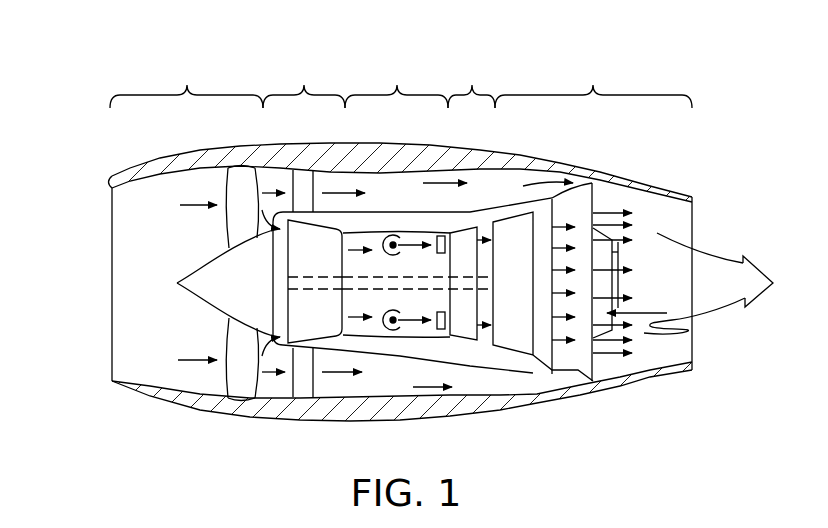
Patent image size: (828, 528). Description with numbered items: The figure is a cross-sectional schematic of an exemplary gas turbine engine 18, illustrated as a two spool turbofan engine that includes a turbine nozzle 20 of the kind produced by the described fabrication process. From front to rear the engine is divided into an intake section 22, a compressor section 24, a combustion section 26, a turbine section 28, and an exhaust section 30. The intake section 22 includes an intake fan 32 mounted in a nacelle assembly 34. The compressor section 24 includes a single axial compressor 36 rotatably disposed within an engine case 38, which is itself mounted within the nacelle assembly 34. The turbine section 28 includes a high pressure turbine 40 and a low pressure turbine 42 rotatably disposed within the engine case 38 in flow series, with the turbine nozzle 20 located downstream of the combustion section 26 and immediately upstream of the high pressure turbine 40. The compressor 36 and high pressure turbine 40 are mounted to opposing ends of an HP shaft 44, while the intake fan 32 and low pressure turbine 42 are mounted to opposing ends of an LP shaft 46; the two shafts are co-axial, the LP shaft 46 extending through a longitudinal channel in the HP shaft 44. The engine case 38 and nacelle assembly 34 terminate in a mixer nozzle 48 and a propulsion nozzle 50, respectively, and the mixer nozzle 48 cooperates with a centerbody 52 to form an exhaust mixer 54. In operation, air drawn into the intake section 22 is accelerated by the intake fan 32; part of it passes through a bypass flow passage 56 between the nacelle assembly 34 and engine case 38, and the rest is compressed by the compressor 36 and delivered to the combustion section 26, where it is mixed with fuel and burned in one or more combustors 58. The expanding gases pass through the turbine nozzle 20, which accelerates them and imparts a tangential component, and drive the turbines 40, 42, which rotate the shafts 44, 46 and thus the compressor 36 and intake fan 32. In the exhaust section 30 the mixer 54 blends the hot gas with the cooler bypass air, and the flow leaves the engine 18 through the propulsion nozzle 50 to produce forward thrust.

The gas turbine engine 18 is at (706, 66).
The turbine nozzle 20 is at (440, 235).
The intake section 22 is at (186, 81).
The compressor section 24 is at (304, 81).
The combustion section 26 is at (396, 81).
The turbine section 28 is at (471, 81).
The exhaust section 30 is at (593, 81).
The intake fan 32 is at (213, 294).
The nacelle assembly 34 is at (235, 421).
The axial compressor 36 is at (299, 264).
The engine case 38 is at (399, 354).
The high pressure turbine 40 is at (466, 231).
The low pressure turbine 42 is at (499, 295).
The HP shaft 44 is at (382, 294).
The LP shaft 46 is at (303, 291).
The mixer nozzle 48 is at (575, 372).
The propulsion nozzle 50 is at (693, 219).
The centerbody 52 is at (620, 255).
The exhaust mixer 54 is at (688, 333).
The bypass flow passage 56 is at (401, 176).
The combustor 58 is at (393, 234).